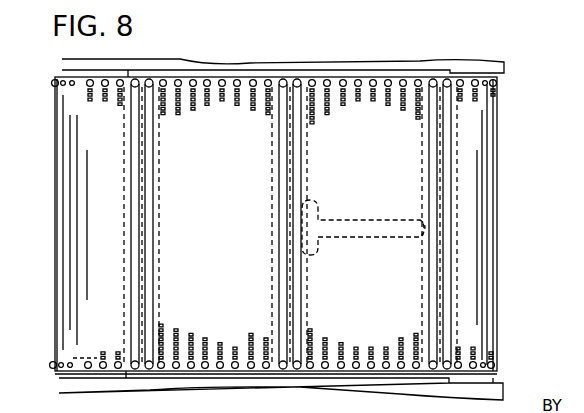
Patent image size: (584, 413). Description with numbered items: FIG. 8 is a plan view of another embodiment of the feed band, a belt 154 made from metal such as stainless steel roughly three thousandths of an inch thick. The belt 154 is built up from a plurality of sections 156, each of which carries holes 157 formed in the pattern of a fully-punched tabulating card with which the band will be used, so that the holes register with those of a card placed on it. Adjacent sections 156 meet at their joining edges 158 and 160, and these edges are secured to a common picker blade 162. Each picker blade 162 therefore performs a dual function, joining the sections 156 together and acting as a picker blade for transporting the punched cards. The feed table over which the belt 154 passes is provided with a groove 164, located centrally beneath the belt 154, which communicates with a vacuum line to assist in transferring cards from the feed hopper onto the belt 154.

The belt 154 is at (504, 168).
The sections 156 is at (291, 196).
The holes 157 is at (412, 122).
The joining edge 158 is at (290, 182).
The joining edge 160 is at (292, 198).
The picker blade 162 is at (153, 296).
The groove 164 is at (387, 238).